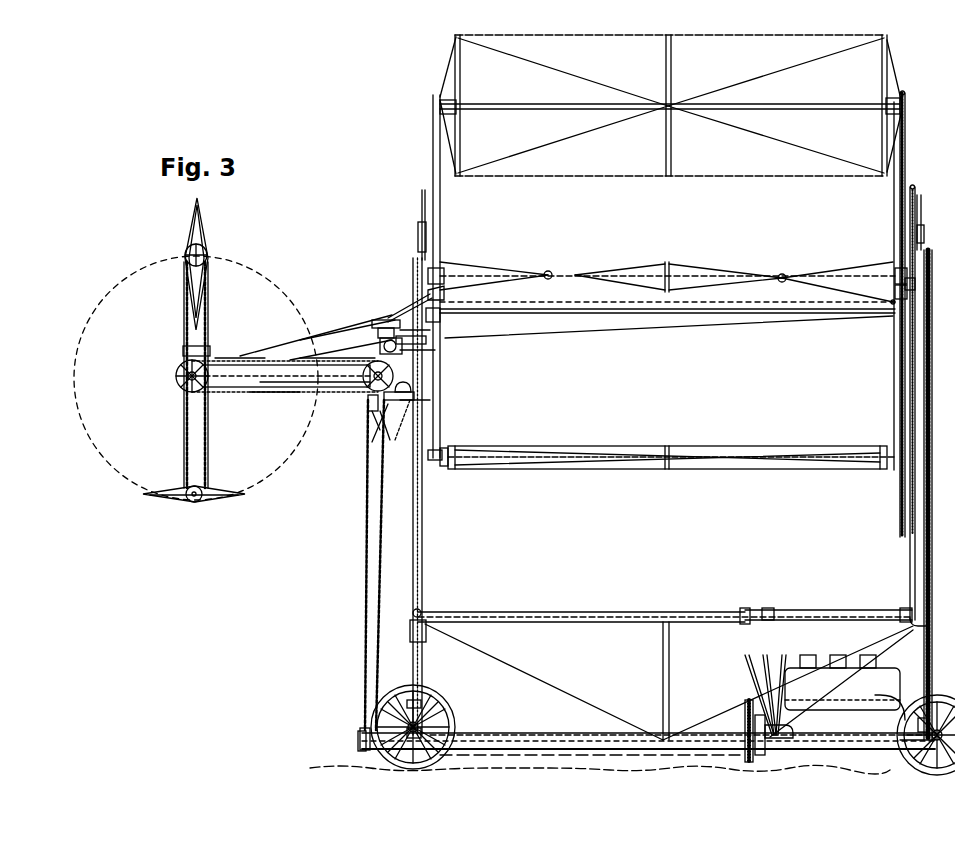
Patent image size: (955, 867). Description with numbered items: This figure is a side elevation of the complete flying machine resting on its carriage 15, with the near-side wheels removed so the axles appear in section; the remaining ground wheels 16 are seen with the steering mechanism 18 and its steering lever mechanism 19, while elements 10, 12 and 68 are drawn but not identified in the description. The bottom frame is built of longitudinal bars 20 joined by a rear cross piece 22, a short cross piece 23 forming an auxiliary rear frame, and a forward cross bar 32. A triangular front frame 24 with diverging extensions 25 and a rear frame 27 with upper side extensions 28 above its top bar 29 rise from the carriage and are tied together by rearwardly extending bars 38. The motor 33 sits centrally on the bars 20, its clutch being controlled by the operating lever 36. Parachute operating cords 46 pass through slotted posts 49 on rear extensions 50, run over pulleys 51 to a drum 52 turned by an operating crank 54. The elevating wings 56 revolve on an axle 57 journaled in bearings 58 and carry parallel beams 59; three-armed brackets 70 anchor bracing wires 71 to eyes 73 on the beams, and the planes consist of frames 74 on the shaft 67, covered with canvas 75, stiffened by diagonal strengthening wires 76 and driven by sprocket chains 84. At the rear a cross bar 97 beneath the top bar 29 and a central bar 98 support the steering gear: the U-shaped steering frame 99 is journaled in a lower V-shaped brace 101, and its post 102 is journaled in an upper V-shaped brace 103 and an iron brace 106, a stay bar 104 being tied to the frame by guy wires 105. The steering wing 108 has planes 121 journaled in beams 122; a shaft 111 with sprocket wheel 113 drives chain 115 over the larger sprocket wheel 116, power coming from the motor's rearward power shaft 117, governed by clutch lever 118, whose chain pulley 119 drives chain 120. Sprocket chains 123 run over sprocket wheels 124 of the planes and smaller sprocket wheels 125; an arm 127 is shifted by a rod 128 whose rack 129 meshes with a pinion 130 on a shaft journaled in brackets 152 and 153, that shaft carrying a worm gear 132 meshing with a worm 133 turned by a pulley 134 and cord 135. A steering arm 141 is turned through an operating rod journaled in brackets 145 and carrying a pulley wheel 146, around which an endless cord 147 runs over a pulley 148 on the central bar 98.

The rear wheel 10 is at (930, 700).
The base plate 12 is at (230, 505).
The carriage 15 is at (680, 692).
The ground wheels 16 is at (390, 695).
The steering mechanism 18 is at (934, 699).
The steering lever mechanism 19 is at (758, 656).
The longitudinal bars 20 is at (568, 730).
The rear cross piece 22 is at (425, 720).
The short cross piece 23 is at (444, 297).
The triangular frame 24 is at (882, 633).
The diverging extensions 25 is at (912, 246).
The rear frame 27 is at (424, 570).
The upper side extensions 28 is at (416, 292).
The top bar 29 is at (448, 292).
The forward cross bar 32 is at (858, 738).
The motor 33 is at (823, 611).
The operating lever 36 is at (744, 695).
The rearwardly extending bars 38 is at (568, 623).
The operating cords 46 is at (408, 524).
The slotted post 49 is at (406, 225).
The rear extension 50 is at (417, 228).
The pulleys 51 is at (410, 612).
The drum 52 is at (896, 608).
The operating crank 54 is at (758, 614).
The elevating wings 56 is at (622, 269).
The axle 57 is at (718, 272).
The bearings 58 is at (450, 264).
The parallel beams 59 is at (808, 104).
The shaft 67 is at (448, 448).
The lower boom 68 is at (618, 446).
The three armed brackets 70 is at (792, 270).
The bracing wires 71 is at (836, 272).
The eyes 73 is at (917, 200).
The frames 74 is at (458, 86).
The canvas covering 75 is at (671, 105).
The strengthening wires 76 is at (757, 78).
The sprocket chains 84 is at (906, 158).
The cross bar 97 is at (409, 412).
The centrally arranged bar 98 is at (572, 308).
The U-shaped main frame 99 is at (266, 390).
The V-shaped supporting brace 101 is at (392, 425).
The upwardly projecting post 102 is at (382, 320).
The upper V-shaped brace 103 is at (404, 338).
The stay bar 104 is at (369, 323).
The guy wires 105 is at (326, 340).
The iron brace 106 is at (396, 312).
The steering wing 108 is at (183, 281).
The shaft 111 is at (364, 388).
The sprocket wheel 113 is at (330, 392).
The chain 115 is at (228, 394).
The sprocket wheel 116 is at (224, 356).
The power shaft 117 is at (488, 734).
The clutch lever 118 is at (783, 658).
The chain pulley 119 is at (364, 726).
The chain 120 is at (366, 540).
The planes 121 is at (188, 230).
The beams 122 is at (183, 396).
The sprocket chains 123 is at (206, 312).
The sprocket wheels 124 is at (183, 290).
The sprocket wheels 125 is at (176, 378).
The arm 127 is at (182, 348).
The rod 128 is at (300, 356).
The toothed rack portion 129 is at (432, 352).
The pinion 130 is at (430, 341).
The worm gear 132 is at (432, 330).
The worm 133 is at (360, 352).
The pulley 134 is at (347, 330).
The operating cord 135 is at (668, 330).
The steering arm 141 is at (370, 423).
The brackets 145 is at (370, 409).
The pulley wheel 146 is at (420, 392).
The operating cord 147 is at (669, 327).
The pulley 148 is at (440, 316).
The bracket 152 is at (318, 366).
The bracket 153 is at (369, 427).